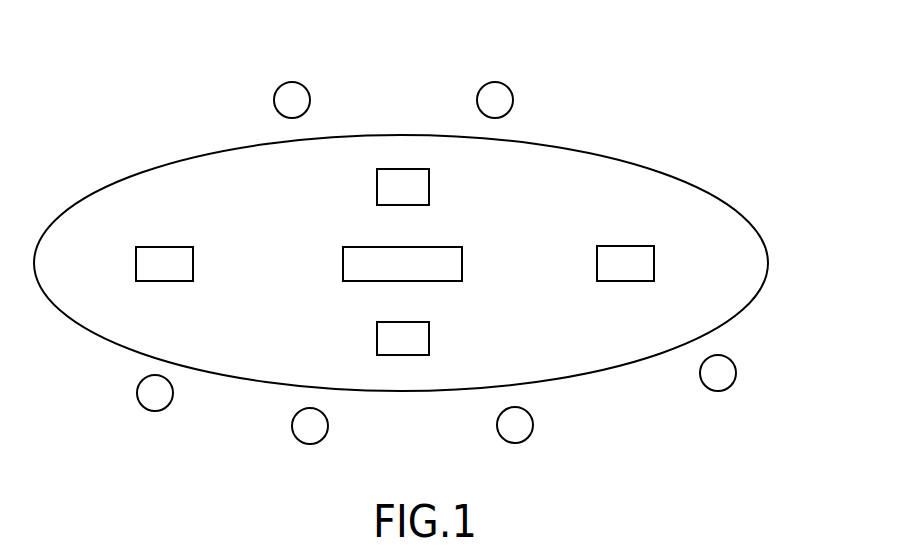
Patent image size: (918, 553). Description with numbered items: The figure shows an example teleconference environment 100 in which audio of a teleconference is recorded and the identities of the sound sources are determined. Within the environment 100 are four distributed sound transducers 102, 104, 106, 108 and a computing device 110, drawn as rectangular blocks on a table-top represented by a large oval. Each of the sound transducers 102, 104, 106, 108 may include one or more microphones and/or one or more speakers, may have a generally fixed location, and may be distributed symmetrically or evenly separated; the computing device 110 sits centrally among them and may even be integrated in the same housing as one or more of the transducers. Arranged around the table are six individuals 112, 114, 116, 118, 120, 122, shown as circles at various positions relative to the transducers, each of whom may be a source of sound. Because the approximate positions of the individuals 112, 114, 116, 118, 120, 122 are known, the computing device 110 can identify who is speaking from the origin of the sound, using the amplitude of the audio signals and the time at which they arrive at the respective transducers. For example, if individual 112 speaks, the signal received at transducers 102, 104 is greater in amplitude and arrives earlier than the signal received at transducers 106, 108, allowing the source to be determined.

The teleconference environment 100 is at (688, 80).
The distributed sound transducer 102 is at (175, 247).
The distributed sound transducer 104 is at (429, 180).
The distributed sound transducer 106 is at (429, 334).
The distributed sound transducer 108 is at (654, 260).
The computing device 110 is at (462, 258).
The individual 112 is at (310, 96).
The individual 114 is at (514, 102).
The individual 116 is at (173, 396).
The individual 118 is at (328, 428).
The individual 120 is at (533, 424).
The individual 122 is at (736, 368).